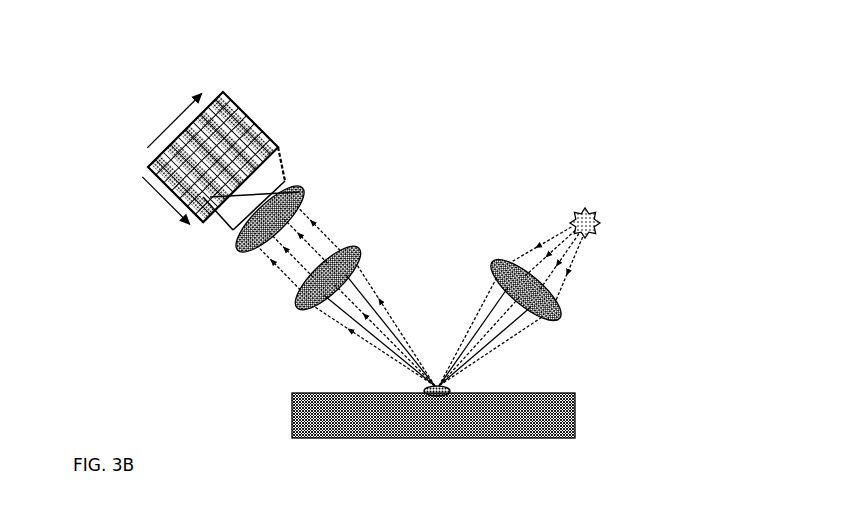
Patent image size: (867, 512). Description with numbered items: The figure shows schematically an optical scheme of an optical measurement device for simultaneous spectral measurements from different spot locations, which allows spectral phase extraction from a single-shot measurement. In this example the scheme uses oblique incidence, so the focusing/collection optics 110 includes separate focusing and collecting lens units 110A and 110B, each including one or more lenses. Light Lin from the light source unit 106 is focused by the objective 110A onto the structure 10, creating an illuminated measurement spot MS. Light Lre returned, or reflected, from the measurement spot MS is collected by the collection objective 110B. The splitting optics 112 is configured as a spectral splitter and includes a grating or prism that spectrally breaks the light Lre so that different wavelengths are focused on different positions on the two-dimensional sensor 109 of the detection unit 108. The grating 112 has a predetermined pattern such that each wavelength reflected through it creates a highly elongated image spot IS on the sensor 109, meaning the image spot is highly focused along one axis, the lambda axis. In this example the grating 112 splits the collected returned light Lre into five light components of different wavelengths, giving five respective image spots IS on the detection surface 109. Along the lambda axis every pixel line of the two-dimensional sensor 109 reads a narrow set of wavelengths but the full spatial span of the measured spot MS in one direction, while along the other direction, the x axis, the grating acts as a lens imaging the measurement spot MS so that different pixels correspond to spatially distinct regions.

The structure 10 is at (566, 158).
The light source unit 106 is at (598, 218).
The detection unit 108 is at (302, 127).
The 2D sensor 109 is at (250, 128).
The focusing/collection optics 110 is at (488, 250).
The focusing lens unit 110A is at (558, 315).
The collecting lens unit 110B is at (360, 257).
The splitting optics 112 is at (302, 190).
The measurement spot MS is at (450, 388).
The image spot IS is at (162, 167).
The light from the light source unit Lin is at (568, 273).
The returned light Lre is at (288, 273).